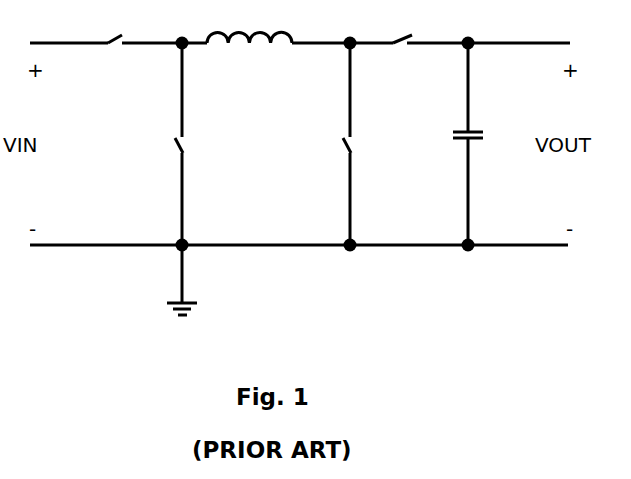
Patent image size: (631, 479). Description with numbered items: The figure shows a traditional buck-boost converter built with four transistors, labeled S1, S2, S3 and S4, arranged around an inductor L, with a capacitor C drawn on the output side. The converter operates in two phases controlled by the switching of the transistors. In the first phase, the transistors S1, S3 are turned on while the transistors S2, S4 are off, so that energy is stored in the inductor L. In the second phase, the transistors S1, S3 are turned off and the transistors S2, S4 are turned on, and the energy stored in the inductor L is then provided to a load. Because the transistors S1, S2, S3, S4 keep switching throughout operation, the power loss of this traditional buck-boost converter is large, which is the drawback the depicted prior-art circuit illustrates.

The transistor S1 is at (114, 27).
The transistor S2 is at (160, 145).
The transistor S3 is at (327, 145).
The transistor S4 is at (399, 27).
The inductor L is at (249, 27).
The output capacitor C is at (476, 151).